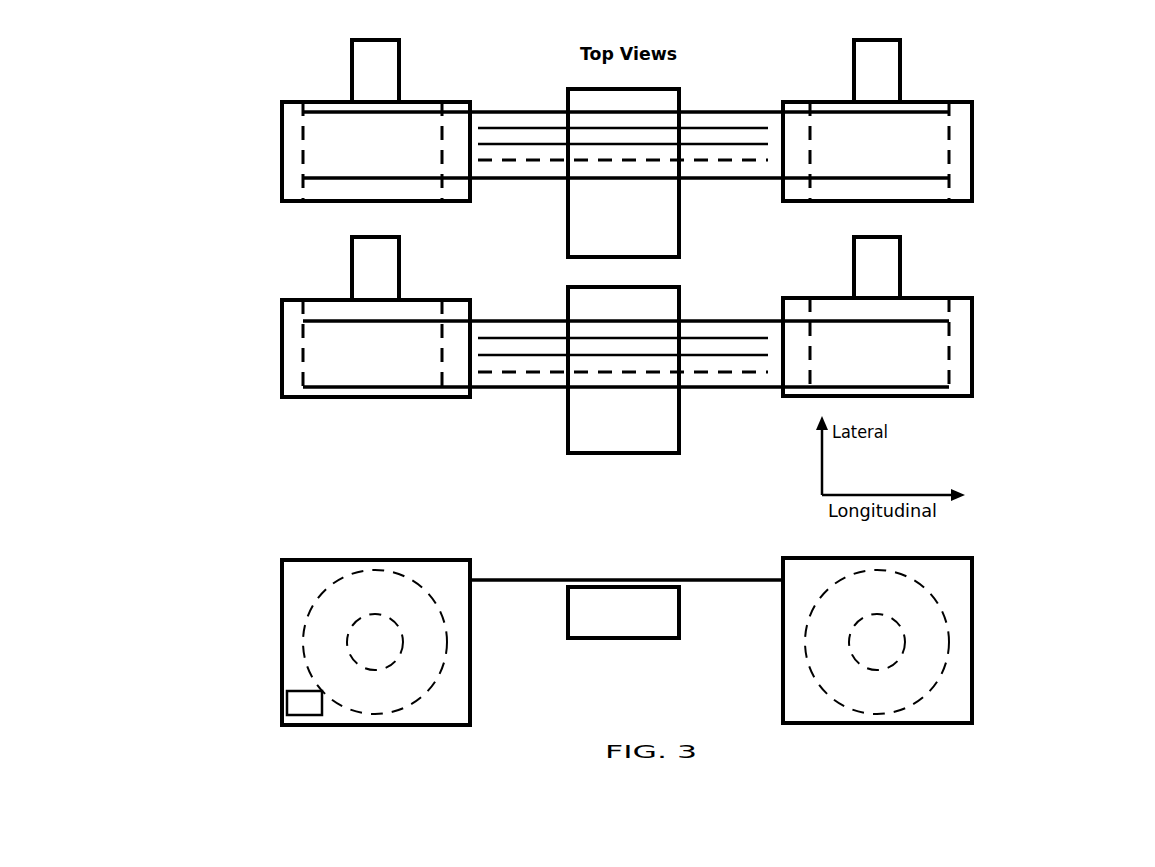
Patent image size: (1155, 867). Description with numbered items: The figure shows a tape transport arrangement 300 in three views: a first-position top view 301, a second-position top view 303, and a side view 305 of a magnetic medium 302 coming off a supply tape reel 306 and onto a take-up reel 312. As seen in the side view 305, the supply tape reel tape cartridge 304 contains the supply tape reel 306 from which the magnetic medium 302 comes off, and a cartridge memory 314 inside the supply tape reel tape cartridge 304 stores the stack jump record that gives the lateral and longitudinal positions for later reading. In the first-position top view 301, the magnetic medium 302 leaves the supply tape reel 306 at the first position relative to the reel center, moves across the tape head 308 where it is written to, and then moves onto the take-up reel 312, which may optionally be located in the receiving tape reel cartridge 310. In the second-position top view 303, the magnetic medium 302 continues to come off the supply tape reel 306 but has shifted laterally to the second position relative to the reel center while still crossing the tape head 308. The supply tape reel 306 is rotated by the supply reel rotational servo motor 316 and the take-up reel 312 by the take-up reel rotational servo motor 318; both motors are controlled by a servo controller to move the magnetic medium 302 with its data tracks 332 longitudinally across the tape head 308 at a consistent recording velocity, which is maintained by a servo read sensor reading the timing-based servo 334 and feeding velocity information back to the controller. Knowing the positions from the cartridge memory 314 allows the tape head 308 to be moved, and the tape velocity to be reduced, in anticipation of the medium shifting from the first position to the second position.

The tape drive system 300 is at (303, 73).
The position 1 top view 301 is at (193, 140).
The magnetic medium 302 is at (540, 640).
The position 2 top view 303 is at (193, 349).
The supply tape reel tape cartridge 304 is at (282, 150).
The side view 305 is at (635, 492).
The supply tape reel 306 is at (303, 122).
The tape head 308 is at (722, 95).
The receiving tape reel cartridge 310 is at (1032, 205).
The take-up reel 312 is at (955, 128).
The cartridge memory 314 is at (305, 716).
The supply reel rotational servo motor 316 is at (358, 640).
The take-up reel rotational servo motor 318 is at (872, 752).
The data tracks 332 is at (552, 145).
The timing-based servo 334 is at (545, 375).